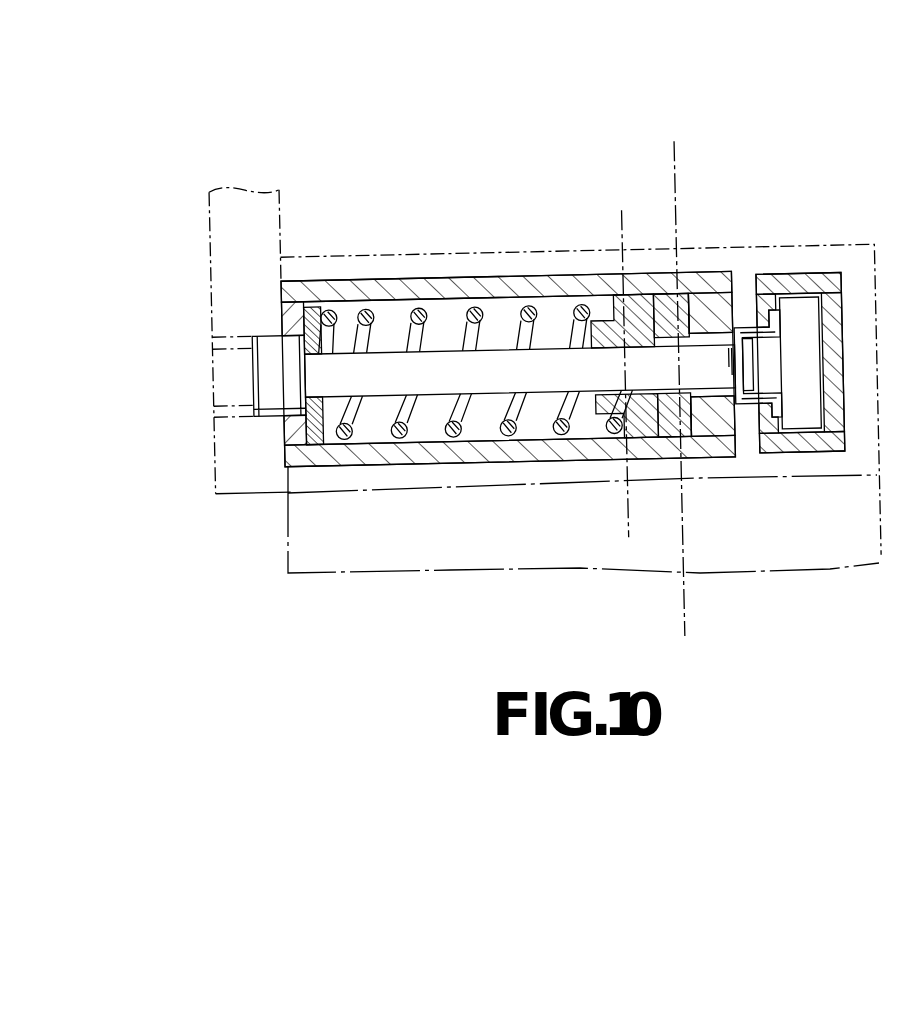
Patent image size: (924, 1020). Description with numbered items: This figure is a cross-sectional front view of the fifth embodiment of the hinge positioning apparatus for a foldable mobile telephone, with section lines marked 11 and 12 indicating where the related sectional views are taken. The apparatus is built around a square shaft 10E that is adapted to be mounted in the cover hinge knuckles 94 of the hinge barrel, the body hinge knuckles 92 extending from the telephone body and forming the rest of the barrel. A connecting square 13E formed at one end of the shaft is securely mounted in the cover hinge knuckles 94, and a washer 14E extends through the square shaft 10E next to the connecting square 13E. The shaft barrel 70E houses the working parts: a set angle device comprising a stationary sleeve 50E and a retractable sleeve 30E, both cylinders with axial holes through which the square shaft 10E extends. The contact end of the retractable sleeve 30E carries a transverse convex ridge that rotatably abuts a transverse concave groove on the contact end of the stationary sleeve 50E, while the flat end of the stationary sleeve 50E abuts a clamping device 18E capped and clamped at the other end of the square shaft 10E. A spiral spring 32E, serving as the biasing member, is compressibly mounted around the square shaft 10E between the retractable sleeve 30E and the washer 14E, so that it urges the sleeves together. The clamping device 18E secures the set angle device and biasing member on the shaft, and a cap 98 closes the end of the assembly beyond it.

The cover hinge knuckles 94 is at (224, 220).
The body hinge knuckles 92 is at (310, 560).
The shaft barrel 70E is at (432, 279).
The washer 14E is at (320, 445).
The connecting square 13E is at (268, 326).
The square shaft 10E is at (497, 353).
The spiral spring 32E is at (367, 304).
The retractable sleeve 30E is at (617, 318).
The stationary sleeve 50E is at (688, 302).
The clamping device 18E is at (747, 330).
The cap 98 is at (818, 282).
The section line 11 is at (672, 147).
The section line 12 is at (666, 218).